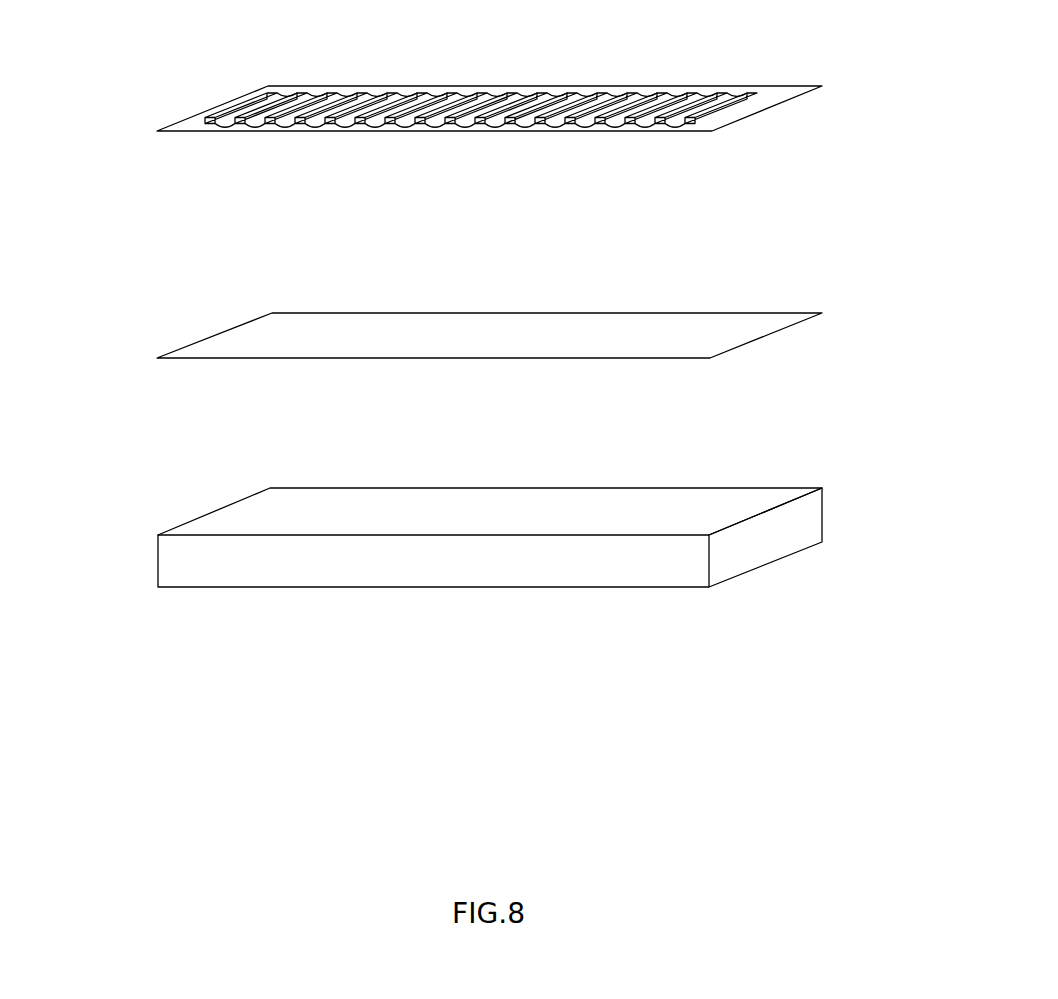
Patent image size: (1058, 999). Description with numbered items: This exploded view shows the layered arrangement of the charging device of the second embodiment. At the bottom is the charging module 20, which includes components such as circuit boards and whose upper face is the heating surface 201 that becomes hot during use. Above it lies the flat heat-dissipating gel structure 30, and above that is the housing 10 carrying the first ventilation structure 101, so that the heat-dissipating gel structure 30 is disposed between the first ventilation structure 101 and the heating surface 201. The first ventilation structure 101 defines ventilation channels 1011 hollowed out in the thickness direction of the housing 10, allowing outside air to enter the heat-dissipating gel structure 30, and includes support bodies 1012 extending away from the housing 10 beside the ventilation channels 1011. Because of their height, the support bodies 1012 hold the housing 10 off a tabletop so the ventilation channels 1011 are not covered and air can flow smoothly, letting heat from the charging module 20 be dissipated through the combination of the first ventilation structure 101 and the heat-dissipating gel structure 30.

The housing 10 is at (501, 104).
The first ventilation structure 101 is at (582, 136).
The support body 1012 is at (703, 116).
The ventilation channel 1011 is at (650, 123).
The heat-dissipating gel structure 30 is at (283, 335).
The charging module 20 is at (535, 560).
The heating surface 201 is at (555, 510).